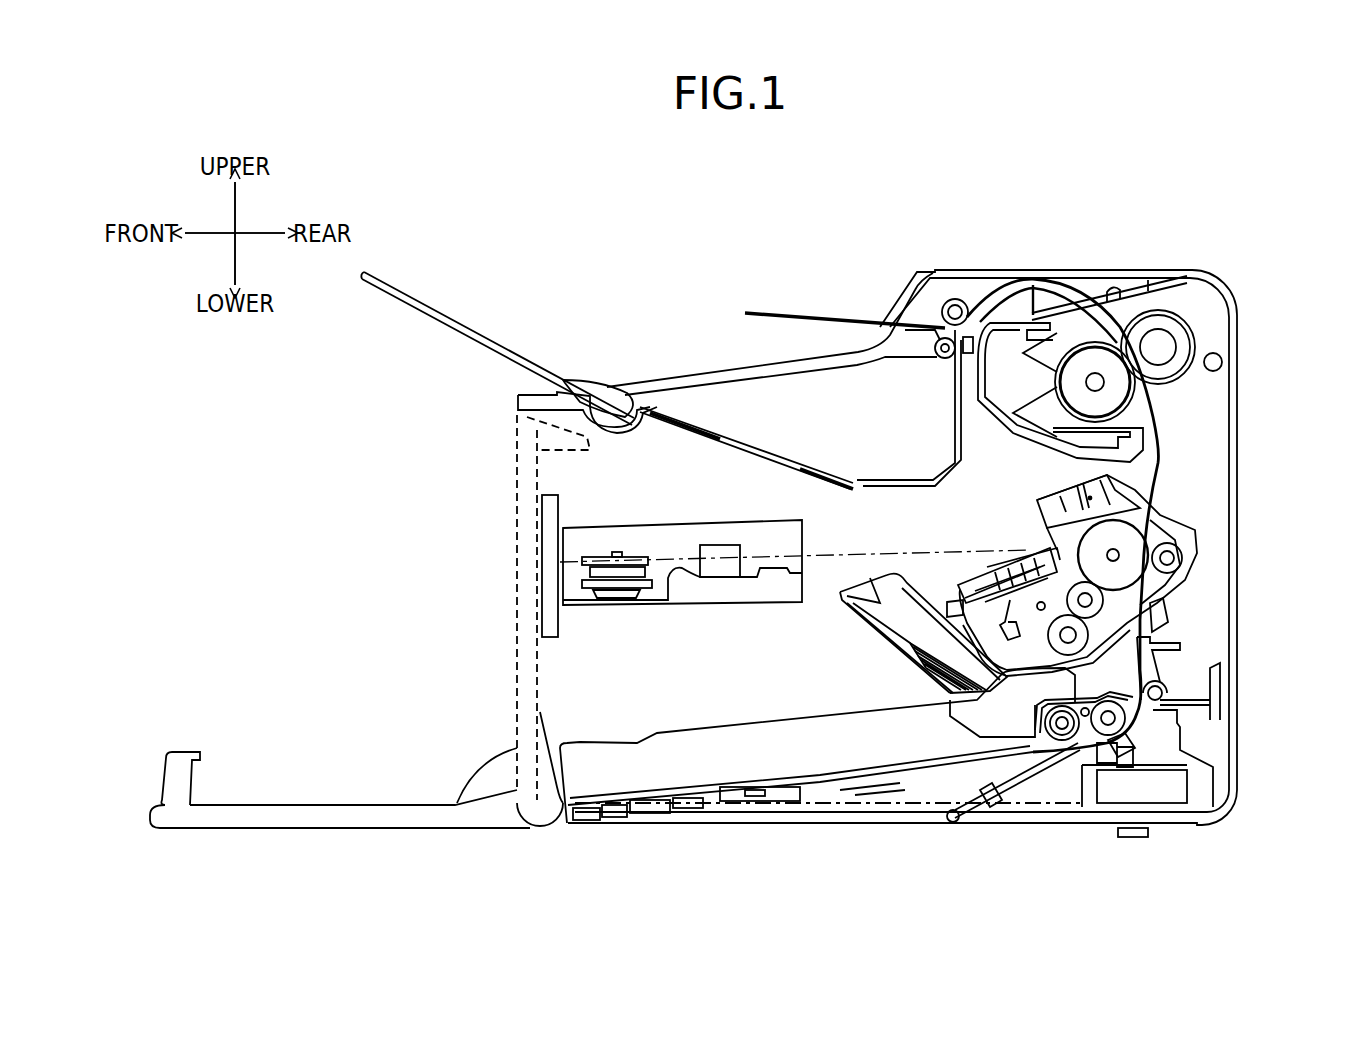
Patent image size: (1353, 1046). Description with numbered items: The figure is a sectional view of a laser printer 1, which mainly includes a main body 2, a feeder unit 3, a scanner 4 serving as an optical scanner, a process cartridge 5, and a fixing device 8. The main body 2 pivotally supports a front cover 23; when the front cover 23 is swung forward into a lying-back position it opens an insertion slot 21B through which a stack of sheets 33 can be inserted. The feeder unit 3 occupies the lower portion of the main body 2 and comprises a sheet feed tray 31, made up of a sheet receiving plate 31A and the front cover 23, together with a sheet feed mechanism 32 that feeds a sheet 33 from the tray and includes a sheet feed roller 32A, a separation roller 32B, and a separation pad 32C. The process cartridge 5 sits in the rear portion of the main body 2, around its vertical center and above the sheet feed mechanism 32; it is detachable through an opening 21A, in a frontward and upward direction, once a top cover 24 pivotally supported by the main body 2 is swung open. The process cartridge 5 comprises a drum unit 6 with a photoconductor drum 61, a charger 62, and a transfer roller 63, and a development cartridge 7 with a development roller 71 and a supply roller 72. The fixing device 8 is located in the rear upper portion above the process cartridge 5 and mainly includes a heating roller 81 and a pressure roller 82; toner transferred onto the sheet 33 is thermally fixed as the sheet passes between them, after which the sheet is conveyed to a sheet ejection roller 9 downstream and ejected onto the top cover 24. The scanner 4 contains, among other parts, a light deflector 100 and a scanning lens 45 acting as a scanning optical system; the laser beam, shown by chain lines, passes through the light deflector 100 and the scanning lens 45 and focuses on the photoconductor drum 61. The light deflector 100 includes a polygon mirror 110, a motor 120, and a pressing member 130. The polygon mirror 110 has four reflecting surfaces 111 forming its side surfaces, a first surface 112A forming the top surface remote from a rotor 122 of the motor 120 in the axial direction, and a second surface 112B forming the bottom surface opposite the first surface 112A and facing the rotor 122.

The laser printer 1 is at (598, 238).
The main body 2 is at (1237, 770).
The feeder unit 3 is at (595, 700).
The scanner 4 is at (805, 535).
The process cartridge 5 is at (1015, 495).
The drum unit 6 is at (1140, 490).
The development cartridge 7 is at (985, 568).
The fixing device 8 is at (1195, 302).
The sheet ejection roller 9 is at (958, 295).
The opening 21A is at (777, 440).
The insertion slot 21B is at (592, 772).
The front cover 23 is at (325, 802).
The top cover 24 is at (727, 433).
The sheet feed tray 31 is at (190, 745).
The sheet receiving plate 31A is at (835, 778).
The sheet feed mechanism 32 is at (1022, 712).
The sheet feed roller 32A is at (1062, 745).
The separation roller 32B is at (1155, 708).
The separation pad 32C is at (1120, 745).
The sheet 33 is at (775, 313).
The scanning lens 45 is at (727, 570).
The photoconductor drum 61 is at (1190, 530).
The charger 62 is at (1083, 492).
The transfer roller 63 is at (1195, 560).
The development roller 71 is at (1160, 615).
The supply roller 72 is at (1160, 658).
The heating roller 81 is at (1067, 381).
The pressure roller 82 is at (1165, 320).
The light deflector 100 is at (585, 548).
The polygon mirror 110 is at (580, 563).
The reflecting surfaces 111 is at (655, 558).
The first surface 112A is at (588, 552).
The second surface 112B is at (585, 580).
The motor 120 is at (616, 594).
The rotor 122 is at (625, 580).
The pressing member 130 is at (622, 557).